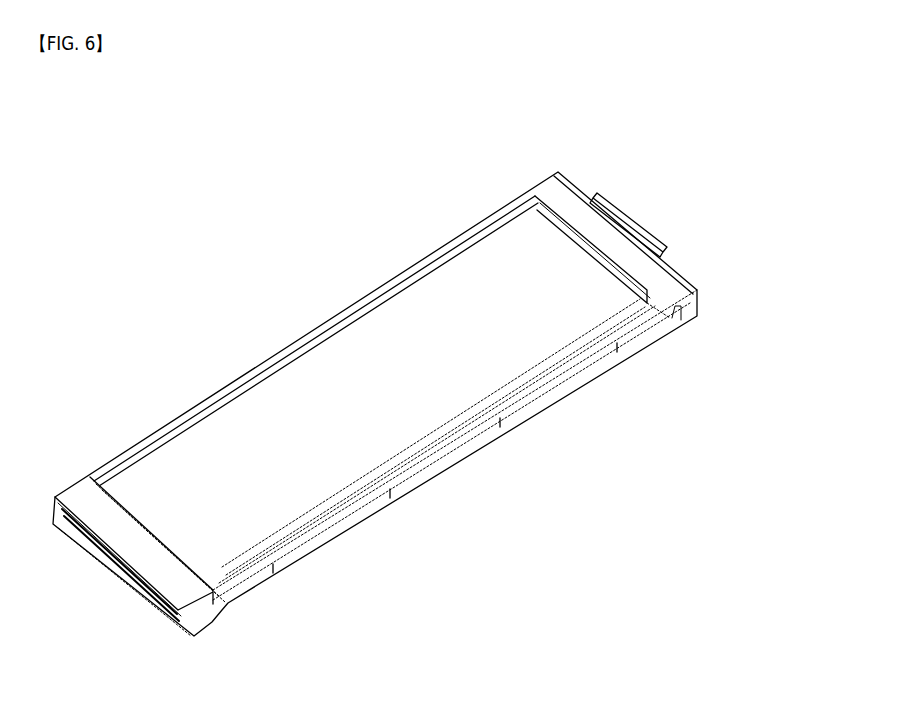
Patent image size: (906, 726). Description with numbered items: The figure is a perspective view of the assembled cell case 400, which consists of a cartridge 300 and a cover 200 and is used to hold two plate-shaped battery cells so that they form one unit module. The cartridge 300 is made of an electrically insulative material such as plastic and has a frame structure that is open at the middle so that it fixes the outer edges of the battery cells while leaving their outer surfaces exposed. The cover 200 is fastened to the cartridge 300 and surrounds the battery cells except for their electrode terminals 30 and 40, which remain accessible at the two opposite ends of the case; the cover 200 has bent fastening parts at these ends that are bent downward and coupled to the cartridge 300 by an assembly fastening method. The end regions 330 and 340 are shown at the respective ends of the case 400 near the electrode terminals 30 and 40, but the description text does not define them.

The cell case 400 is at (142, 202).
The cartridge 300 is at (707, 302).
The cover 200 is at (463, 378).
The end cap (top right) 340 is at (655, 221).
The electrode terminal 40 is at (633, 226).
The end cap (bottom left) 330 is at (102, 584).
The electrode terminal 30 is at (123, 568).